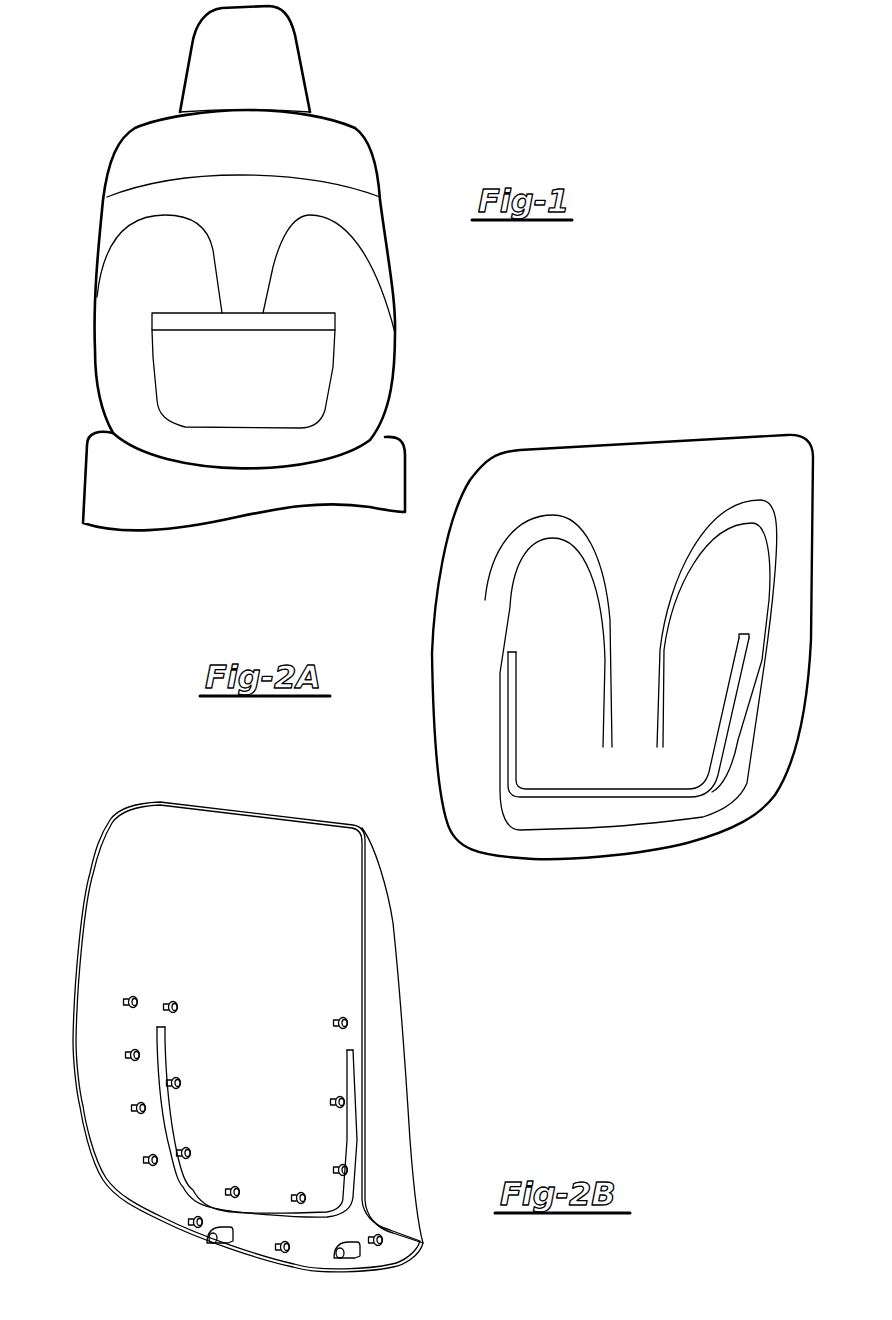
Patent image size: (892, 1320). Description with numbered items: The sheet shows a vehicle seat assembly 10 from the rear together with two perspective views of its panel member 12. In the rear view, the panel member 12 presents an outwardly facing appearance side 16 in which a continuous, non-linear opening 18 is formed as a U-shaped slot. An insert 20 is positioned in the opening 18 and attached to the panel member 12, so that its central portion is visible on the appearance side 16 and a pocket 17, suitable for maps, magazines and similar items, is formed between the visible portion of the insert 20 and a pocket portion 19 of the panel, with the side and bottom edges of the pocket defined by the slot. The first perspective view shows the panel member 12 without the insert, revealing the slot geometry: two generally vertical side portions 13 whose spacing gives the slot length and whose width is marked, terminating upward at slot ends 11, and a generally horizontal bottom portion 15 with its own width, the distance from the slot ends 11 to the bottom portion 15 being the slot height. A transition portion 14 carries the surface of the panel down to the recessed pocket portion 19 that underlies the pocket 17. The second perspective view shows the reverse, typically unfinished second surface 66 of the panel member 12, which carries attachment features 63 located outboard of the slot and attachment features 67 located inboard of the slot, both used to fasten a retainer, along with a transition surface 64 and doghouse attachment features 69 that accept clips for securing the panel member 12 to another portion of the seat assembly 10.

In FIG. 1, the seat assembly 10 is at (117, 117).
In FIG. 1, the panel member 12 is at (93, 250).
In FIG. 2A, the panel member 12 is at (415, 555).
In FIG. 2B, the panel member 12 is at (83, 822).
In FIG. 1, the appearance side 16 is at (130, 208).
In FIG. 2A, the appearance side 16 is at (683, 467).
In FIG. 2B, the appearance side 16 is at (390, 1141).
In FIG. 1, the pocket 17 is at (303, 310).
In FIG. 1, the opening 18 is at (158, 371).
In FIG. 2A, the opening 18 is at (732, 748).
In FIG. 2B, the opening 18 is at (160, 1128).
In FIG. 1, the insert 20 is at (180, 395).
In FIG. 2A, the slot ends 11 is at (517, 652).
In FIG. 2B, the slot ends 11 is at (161, 1026).
In FIG. 2A, the side portion 13 is at (513, 681).
In FIG. 2B, the side portion 13 is at (163, 1118).
In FIG. 2A, the transition portion 14 is at (677, 806).
In FIG. 2A, the bottom portion 15 is at (582, 797).
In FIG. 2B, the bottom portion 15 is at (268, 1211).
In FIG. 2A, the pocket portion 19 is at (682, 760).
In FIG. 2B, the second surface 66 is at (175, 845).
In FIG. 2B, the attachment features 63 is at (124, 1004).
In FIG. 2B, the attachment features 67 is at (182, 1083).
In FIG. 2B, the transition surface 64 is at (262, 1227).
In FIG. 2B, the doghouse attachment features 69 is at (337, 1255).